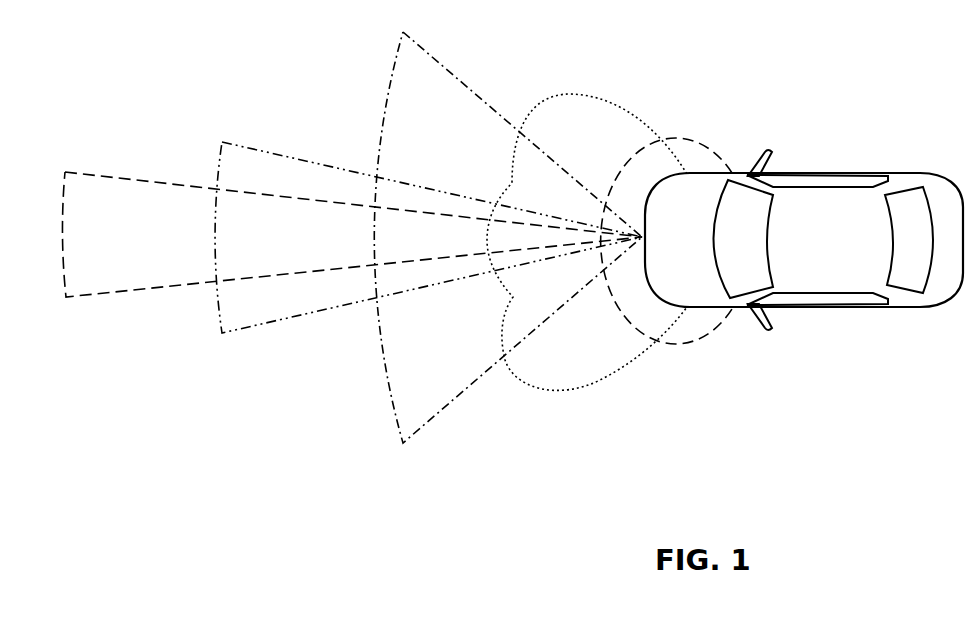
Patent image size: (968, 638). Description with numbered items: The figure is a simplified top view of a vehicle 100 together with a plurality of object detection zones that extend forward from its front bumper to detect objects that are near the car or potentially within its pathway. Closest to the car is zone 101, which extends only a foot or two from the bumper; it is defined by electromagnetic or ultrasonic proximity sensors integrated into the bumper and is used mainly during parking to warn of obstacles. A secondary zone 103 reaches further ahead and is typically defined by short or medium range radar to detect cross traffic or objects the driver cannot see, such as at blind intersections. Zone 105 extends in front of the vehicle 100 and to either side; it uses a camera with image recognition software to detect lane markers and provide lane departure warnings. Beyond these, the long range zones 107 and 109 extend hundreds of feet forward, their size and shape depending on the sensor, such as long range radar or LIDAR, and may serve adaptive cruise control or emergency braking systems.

The vehicle 100 is at (845, 249).
The zone 101 is at (680, 150).
The secondary zone 103 is at (583, 107).
The zone 105 is at (418, 63).
The long range zone 107 is at (298, 170).
The long range zone 109 is at (80, 187).